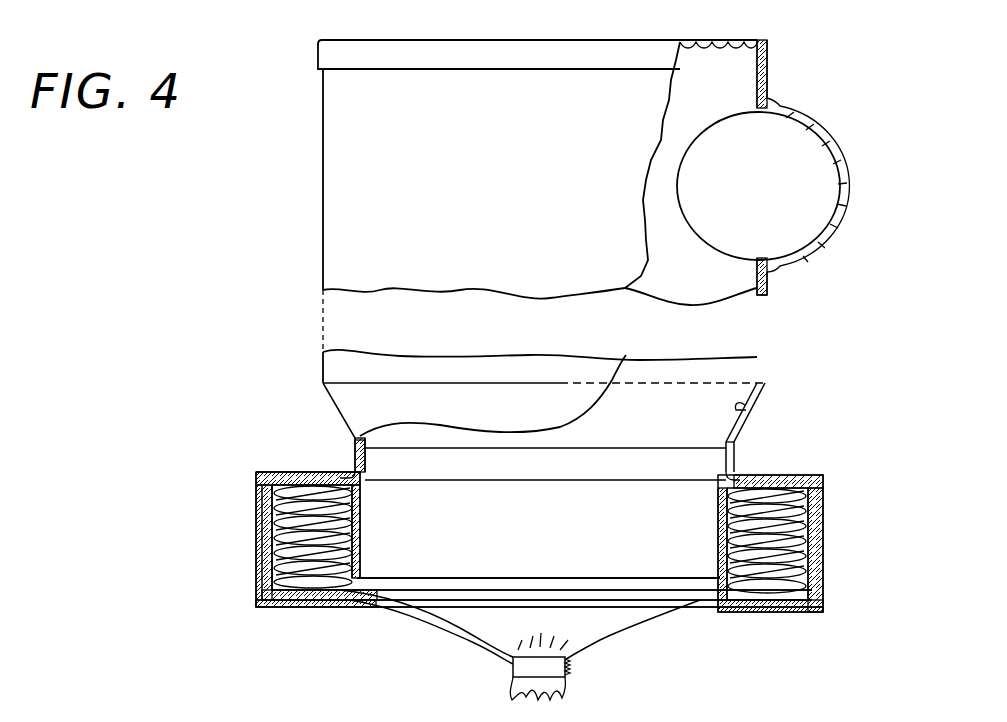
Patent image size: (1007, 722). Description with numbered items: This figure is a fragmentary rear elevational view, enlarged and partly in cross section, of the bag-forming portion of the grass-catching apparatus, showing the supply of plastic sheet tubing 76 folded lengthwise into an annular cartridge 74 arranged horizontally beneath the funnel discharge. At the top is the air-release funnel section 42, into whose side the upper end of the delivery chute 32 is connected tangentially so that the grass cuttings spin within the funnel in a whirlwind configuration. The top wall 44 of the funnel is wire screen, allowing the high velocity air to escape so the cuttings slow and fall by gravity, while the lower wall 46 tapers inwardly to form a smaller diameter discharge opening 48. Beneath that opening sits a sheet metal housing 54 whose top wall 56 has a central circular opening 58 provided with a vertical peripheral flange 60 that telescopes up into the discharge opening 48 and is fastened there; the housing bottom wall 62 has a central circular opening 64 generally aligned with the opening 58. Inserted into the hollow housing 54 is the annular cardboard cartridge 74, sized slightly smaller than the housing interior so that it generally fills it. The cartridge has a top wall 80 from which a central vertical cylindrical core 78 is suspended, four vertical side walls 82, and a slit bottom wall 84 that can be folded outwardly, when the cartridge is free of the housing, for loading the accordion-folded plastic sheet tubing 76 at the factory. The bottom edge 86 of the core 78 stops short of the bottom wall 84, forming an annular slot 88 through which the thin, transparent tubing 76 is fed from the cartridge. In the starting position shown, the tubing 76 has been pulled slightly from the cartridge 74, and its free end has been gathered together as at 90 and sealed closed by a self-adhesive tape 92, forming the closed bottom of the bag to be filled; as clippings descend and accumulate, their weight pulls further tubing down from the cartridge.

The delivery chute 32 is at (826, 132).
The air-release funnel section 42 is at (528, 170).
The top wall 44 is at (745, 40).
The lower wall 46 is at (750, 406).
The discharge opening 48 is at (696, 463).
The sheet metal housing 54 is at (264, 520).
The top wall 56 is at (296, 476).
The circular opening 58 is at (550, 482).
The vertical peripheral flange 60 is at (372, 465).
The bottom wall 62 is at (268, 608).
The circular opening 64 is at (384, 608).
The annular cardboard cartridge 74 is at (726, 560).
The plastic sheet tubing 76 is at (278, 552).
The vertical cylindrical core 78 is at (724, 527).
The top wall 80 is at (264, 480).
The vertical side walls 82 is at (272, 507).
The bottom wall 84 is at (316, 600).
The bottom edge 86 is at (450, 600).
The annular slot 88 is at (502, 590).
The gathered lower free end 90 is at (547, 688).
The self-adhesive tape 92 is at (513, 676).